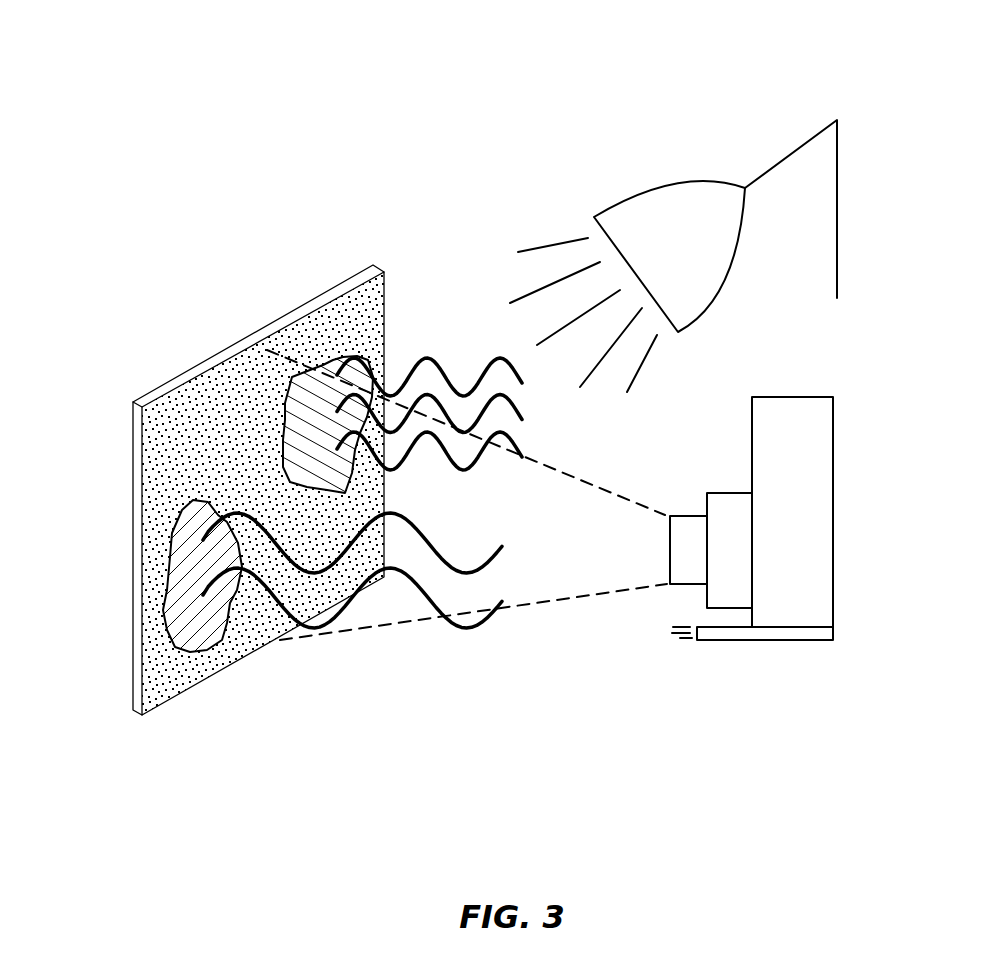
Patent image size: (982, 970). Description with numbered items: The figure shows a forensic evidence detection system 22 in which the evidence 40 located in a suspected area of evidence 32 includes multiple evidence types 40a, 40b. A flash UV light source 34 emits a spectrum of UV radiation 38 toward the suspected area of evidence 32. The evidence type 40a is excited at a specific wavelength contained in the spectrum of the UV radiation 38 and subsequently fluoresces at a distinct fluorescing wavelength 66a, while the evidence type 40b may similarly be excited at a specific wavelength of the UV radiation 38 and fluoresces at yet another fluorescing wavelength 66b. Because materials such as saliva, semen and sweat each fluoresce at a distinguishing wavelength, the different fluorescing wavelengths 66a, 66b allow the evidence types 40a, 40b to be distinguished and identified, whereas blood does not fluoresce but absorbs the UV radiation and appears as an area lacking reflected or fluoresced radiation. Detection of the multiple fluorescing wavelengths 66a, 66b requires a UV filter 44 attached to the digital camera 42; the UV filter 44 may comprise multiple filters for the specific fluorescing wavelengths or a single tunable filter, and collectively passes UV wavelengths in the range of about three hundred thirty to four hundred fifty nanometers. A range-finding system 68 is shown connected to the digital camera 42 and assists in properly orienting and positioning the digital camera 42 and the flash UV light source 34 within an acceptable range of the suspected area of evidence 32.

The forensic evidence detection system 22 is at (491, 126).
The suspected area of evidence 32 is at (187, 379).
The flash UV light source 34 is at (666, 257).
The UV radiation 38 is at (558, 242).
The evidence 40 is at (250, 262).
The evidence type 40a is at (208, 632).
The evidence type 40b is at (337, 352).
The digital camera 42 is at (776, 505).
The UV filter 44 is at (688, 585).
The fluorescing wavelength 66a is at (450, 630).
The fluorescing wavelength 66b is at (432, 360).
The range-finding system 68 is at (772, 640).